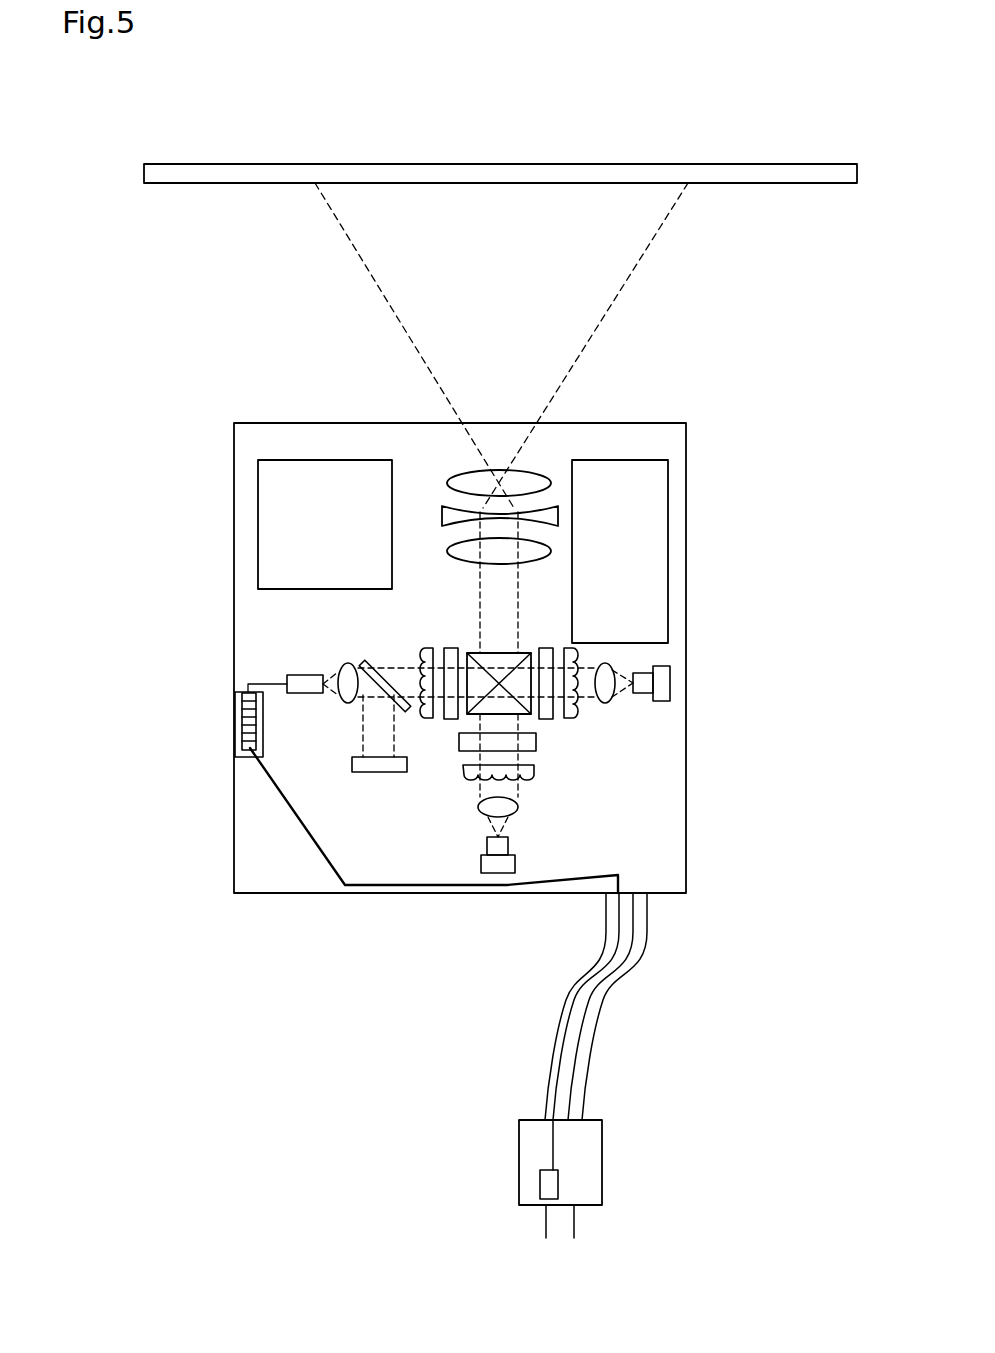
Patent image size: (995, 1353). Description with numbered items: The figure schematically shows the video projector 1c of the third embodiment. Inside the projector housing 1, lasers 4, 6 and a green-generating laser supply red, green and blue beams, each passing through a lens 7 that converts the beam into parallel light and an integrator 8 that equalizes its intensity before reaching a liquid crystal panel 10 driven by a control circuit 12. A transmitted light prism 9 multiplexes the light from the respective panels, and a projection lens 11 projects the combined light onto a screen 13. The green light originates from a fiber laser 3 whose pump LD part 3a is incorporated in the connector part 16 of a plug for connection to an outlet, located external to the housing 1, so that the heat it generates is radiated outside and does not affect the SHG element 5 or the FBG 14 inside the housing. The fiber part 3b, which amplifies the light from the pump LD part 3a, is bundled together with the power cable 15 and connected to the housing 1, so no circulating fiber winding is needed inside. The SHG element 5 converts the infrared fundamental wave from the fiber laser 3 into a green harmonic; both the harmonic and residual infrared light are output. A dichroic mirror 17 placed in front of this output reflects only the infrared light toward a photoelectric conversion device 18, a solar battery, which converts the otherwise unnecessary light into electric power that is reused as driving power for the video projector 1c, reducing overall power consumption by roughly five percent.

The projector housing 1 is at (233, 868).
The video projector 1c is at (489, 710).
The fiber laser 3 is at (551, 1153).
The pump LD part 3a is at (511, 1182).
The fiber part 3b is at (547, 1090).
The laser 4 is at (481, 863).
The SHG element 5 is at (305, 693).
The laser 6 is at (665, 684).
The lens 7 is at (348, 703).
The integrator 8 is at (430, 650).
The transmitted light prism 9 is at (497, 658).
The liquid crystal panel 10 is at (549, 648).
The projection lens 11 is at (550, 512).
The control circuit 12 is at (343, 480).
The screen 13 is at (808, 172).
The FBG 14 is at (247, 713).
The power cable 15 is at (580, 1017).
The connector part 16 is at (597, 1157).
The dichroic mirror 17 is at (363, 662).
The photoelectric conversion device 18 is at (383, 765).